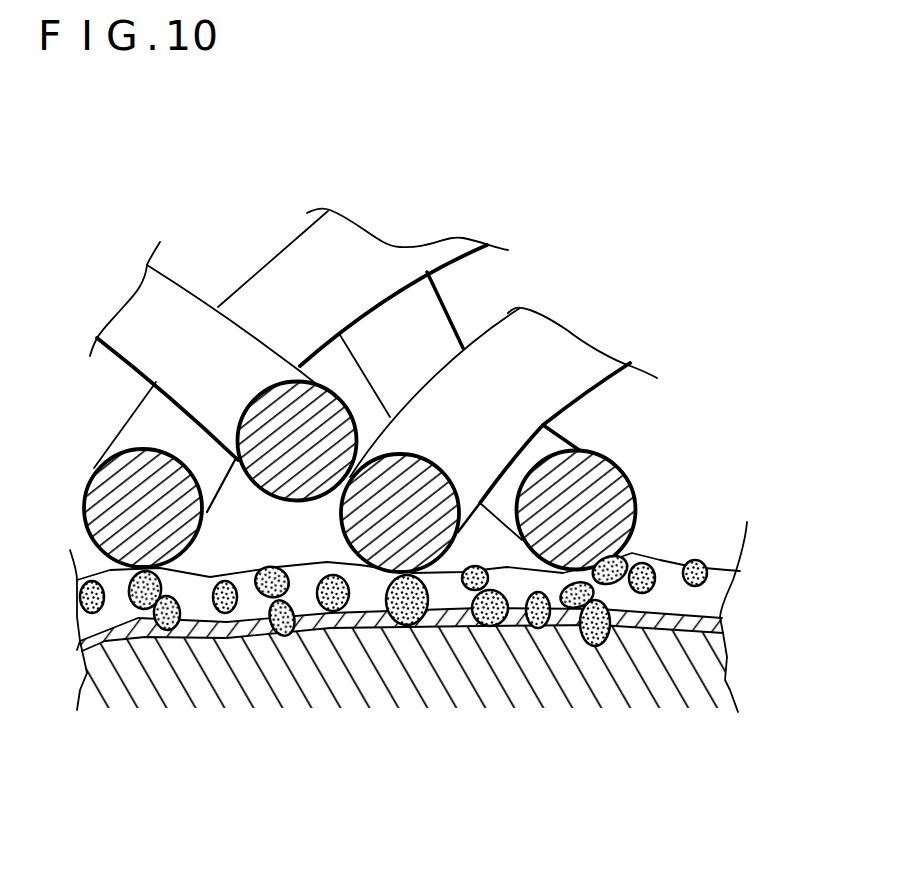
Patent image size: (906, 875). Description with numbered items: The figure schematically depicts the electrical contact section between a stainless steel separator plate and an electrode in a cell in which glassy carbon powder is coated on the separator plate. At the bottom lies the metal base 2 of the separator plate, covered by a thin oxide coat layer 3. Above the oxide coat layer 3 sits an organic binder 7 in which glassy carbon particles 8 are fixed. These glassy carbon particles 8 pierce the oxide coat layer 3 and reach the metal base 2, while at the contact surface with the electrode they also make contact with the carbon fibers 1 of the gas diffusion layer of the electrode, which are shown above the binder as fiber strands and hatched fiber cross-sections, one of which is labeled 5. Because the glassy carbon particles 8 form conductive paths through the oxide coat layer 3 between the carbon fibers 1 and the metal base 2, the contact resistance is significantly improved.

The carbon fibers 1 is at (537, 398).
The fiber cross-section 5 is at (597, 507).
The glassy carbon particles 8 is at (632, 553).
The organic binder 7 is at (693, 607).
The oxide coat layer 3 is at (698, 623).
The metal base 2 is at (677, 682).